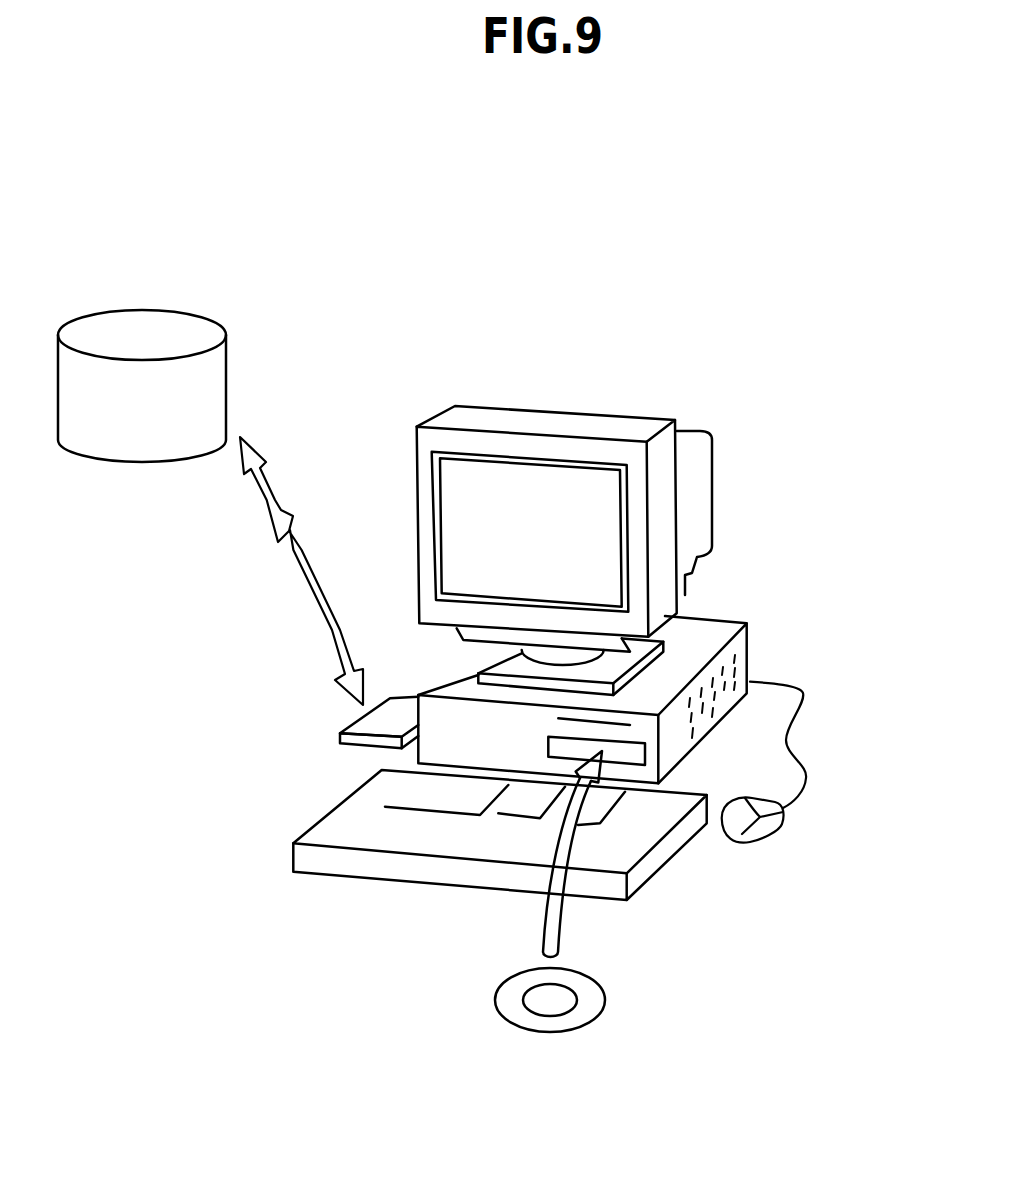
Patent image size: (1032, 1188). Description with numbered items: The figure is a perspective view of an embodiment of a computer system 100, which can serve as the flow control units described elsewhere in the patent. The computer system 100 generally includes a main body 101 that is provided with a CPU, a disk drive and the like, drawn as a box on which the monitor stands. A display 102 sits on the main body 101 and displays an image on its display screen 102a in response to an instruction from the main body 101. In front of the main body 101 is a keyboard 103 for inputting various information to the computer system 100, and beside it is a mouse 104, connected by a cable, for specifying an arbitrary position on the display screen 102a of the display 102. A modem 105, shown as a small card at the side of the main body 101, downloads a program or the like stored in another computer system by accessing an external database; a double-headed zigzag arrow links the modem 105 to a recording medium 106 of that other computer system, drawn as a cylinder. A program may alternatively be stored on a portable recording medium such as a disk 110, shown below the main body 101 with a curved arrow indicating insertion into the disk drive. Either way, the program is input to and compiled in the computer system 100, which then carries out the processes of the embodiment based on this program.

The computer system 100 is at (690, 343).
The main body 101 is at (735, 621).
The display 102 is at (661, 420).
The display screen 102a is at (488, 480).
The keyboard 103 is at (342, 815).
The mouse 104 is at (752, 834).
The modem 105 is at (357, 720).
The recording medium 106 is at (207, 319).
The disk 110 is at (602, 998).